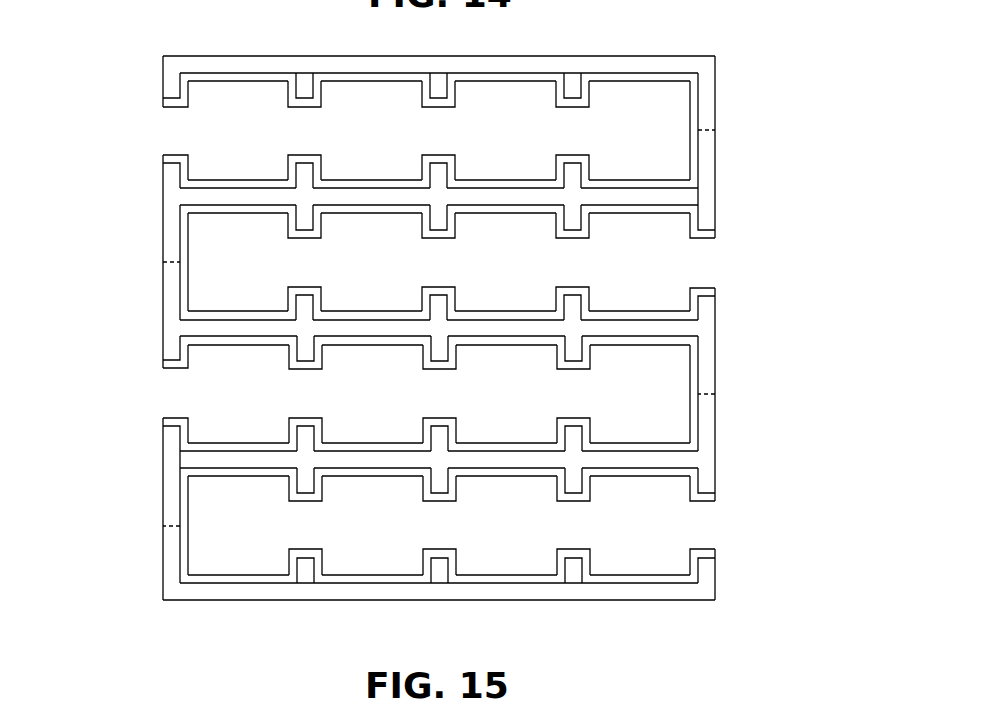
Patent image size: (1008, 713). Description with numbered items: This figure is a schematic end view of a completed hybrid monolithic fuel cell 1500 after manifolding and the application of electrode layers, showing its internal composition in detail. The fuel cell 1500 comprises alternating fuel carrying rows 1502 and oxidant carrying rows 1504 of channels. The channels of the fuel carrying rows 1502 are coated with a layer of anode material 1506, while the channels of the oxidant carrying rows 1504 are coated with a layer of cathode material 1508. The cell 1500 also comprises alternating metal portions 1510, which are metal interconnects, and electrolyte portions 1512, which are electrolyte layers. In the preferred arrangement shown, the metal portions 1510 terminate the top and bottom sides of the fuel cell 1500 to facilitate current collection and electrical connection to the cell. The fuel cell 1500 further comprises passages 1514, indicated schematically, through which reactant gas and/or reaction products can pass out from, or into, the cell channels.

The fuel cell 1500 is at (777, 43).
The fuel carrying rows 1502 is at (805, 103).
The oxidant carrying rows 1504 is at (132, 287).
The anode material 1506 is at (333, 80).
The cathode material 1508 is at (333, 210).
The metal portions 1510 is at (172, 69).
The electrolyte portions 1512 is at (171, 207).
The passages 1514 is at (148, 130).